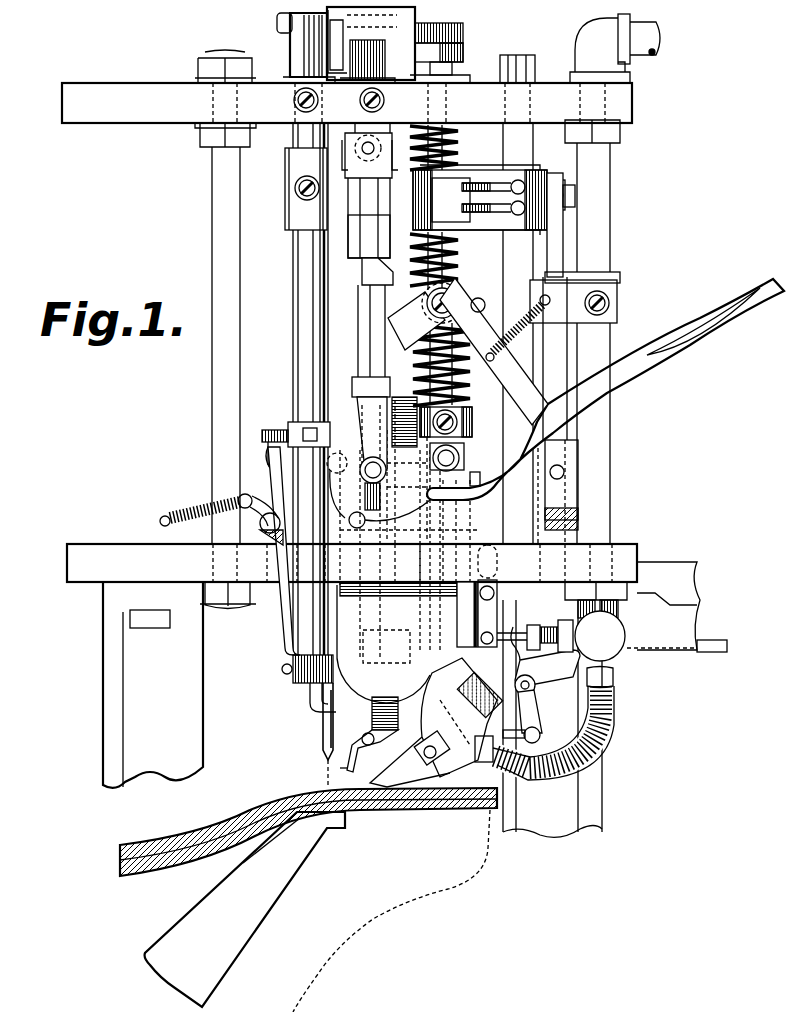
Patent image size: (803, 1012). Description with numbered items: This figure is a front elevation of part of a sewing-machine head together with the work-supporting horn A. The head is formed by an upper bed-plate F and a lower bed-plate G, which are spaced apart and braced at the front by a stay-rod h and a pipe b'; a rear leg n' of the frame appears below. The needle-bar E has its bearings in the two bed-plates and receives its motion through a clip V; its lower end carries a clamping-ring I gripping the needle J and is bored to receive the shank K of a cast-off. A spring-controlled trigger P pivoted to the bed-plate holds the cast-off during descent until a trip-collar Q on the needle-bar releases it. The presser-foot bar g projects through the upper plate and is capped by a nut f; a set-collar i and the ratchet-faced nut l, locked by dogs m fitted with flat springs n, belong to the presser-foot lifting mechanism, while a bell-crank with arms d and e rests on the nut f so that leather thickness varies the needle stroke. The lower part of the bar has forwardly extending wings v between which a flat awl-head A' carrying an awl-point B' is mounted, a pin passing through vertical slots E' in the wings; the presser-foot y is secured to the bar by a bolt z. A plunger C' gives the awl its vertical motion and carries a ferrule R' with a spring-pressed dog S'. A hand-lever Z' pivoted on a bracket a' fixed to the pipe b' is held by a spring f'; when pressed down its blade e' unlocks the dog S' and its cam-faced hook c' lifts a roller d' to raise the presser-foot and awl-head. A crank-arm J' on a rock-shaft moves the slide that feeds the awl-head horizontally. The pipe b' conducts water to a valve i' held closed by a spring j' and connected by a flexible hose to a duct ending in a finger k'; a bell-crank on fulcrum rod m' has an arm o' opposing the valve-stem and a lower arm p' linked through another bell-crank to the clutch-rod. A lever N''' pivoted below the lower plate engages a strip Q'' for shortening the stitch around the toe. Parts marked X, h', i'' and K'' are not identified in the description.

The clamp X is at (277, 21).
The bell-crank arm d is at (303, 41).
The bell-crank arm e is at (390, 41).
The nut f is at (448, 51).
The finger k' is at (530, 288).
The spring-pressed dog S' is at (320, 100).
The ferrule R' is at (387, 100).
The upper bed-plate F is at (347, 103).
The stay-rod h is at (216, 297).
The clip V is at (284, 195).
The presser-foot bar g is at (458, 158).
The dogs m is at (493, 179).
The spring j' is at (555, 174).
The pipe b' is at (592, 332).
The ratchet-faced nut l is at (418, 205).
The spring h' is at (427, 261).
The flat springs n is at (569, 306).
The blade portion e' is at (425, 315).
The bracket a' is at (494, 351).
The spring f' is at (551, 320).
The hand-lever Z' is at (605, 389).
The needle-bar E is at (295, 389).
The plunger C' is at (364, 296).
The trip-collar Q is at (296, 434).
The awl-head A' is at (420, 526).
The set-collar i is at (452, 419).
The cam-faced hook c' is at (484, 464).
The roller d' is at (432, 461).
The vertical slots E' is at (378, 490).
The lower bed-plate G is at (352, 563).
The lever N''' is at (509, 596).
The spring-controlled trigger P is at (283, 625).
The clamping-ring I is at (282, 668).
The cast-off shank K is at (297, 697).
The needle J is at (300, 735).
The awl-point B' is at (308, 819).
The rear frame leg n' is at (179, 685).
The wing v is at (350, 622).
The strip Q'' is at (408, 614).
The bolt z is at (479, 682).
The crank-arm J' is at (550, 621).
The valve i' is at (600, 636).
The bell-crank arm o' is at (538, 657).
The fulcrum rod m' is at (539, 685).
The lower bell-crank arm p' is at (533, 716).
The presser-foot y is at (433, 722).
The bracket i'' is at (427, 736).
The tip K'' is at (374, 751).
The work-supporting horn A is at (317, 911).